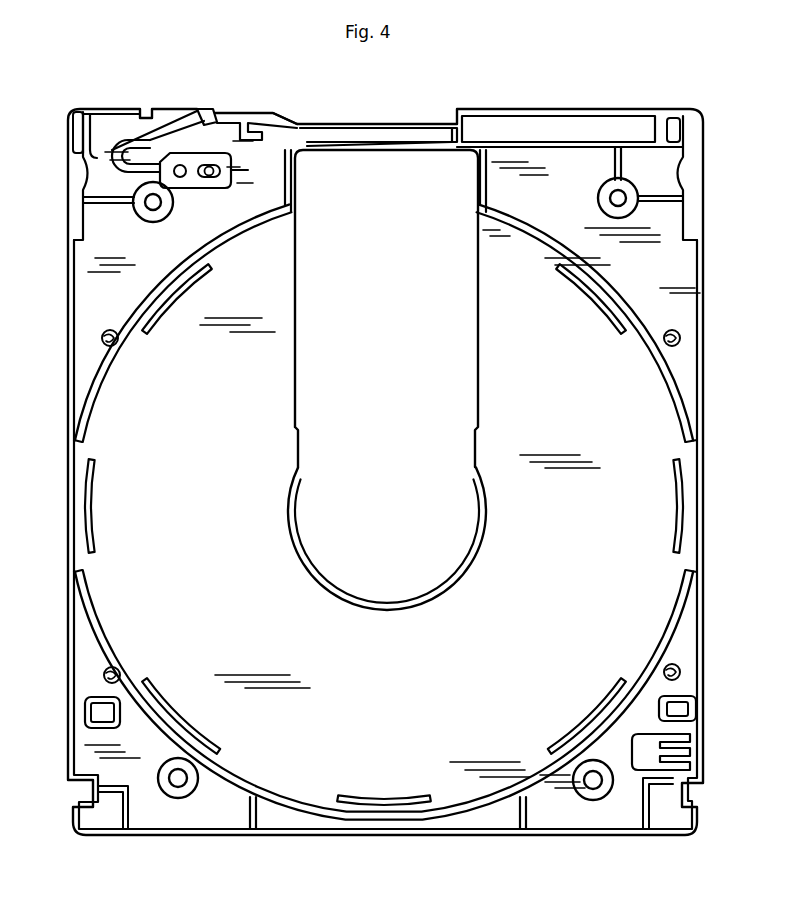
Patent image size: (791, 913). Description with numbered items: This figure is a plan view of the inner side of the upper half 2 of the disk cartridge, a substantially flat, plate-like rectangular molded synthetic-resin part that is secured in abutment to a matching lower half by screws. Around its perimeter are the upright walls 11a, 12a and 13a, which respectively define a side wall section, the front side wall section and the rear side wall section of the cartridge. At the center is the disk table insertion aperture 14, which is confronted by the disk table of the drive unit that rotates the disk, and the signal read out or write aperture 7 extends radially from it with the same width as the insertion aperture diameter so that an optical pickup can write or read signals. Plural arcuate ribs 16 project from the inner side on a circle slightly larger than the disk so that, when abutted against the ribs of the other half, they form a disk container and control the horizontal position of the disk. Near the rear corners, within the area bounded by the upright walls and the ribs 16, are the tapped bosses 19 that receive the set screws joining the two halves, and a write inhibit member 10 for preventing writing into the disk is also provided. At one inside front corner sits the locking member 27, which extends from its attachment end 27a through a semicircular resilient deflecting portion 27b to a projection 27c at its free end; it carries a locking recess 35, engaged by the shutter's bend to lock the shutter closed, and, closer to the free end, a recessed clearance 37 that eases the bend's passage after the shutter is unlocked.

The upper half 2 is at (80, 292).
The signal read out or write aperture 7 is at (480, 387).
The write inhibit member 10 is at (664, 728).
The upright wall 11a is at (75, 436).
The upright wall 12a is at (555, 109).
The upright wall 13a is at (310, 836).
The disk table insertion aperture 14 is at (412, 603).
The arcuate ribs 16 is at (105, 392).
The tapped bosses 19 is at (153, 204).
The locking member 27 is at (120, 140).
The attachment end 27a is at (200, 189).
The semicircular resilient deflecting portion 27b is at (88, 122).
The projection 27c is at (268, 113).
The locking recess 35 is at (207, 108).
The recessed clearance 37 is at (240, 122).